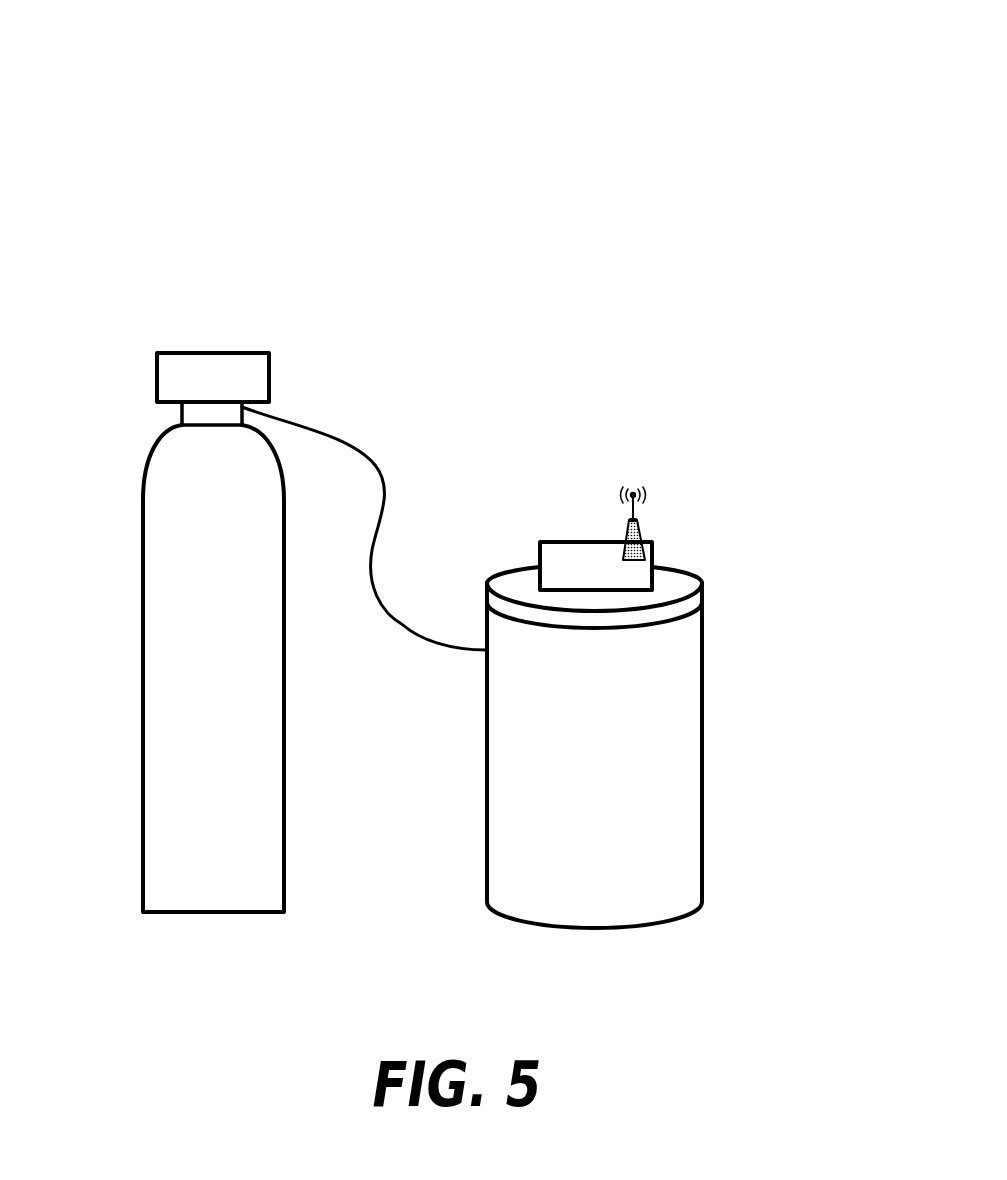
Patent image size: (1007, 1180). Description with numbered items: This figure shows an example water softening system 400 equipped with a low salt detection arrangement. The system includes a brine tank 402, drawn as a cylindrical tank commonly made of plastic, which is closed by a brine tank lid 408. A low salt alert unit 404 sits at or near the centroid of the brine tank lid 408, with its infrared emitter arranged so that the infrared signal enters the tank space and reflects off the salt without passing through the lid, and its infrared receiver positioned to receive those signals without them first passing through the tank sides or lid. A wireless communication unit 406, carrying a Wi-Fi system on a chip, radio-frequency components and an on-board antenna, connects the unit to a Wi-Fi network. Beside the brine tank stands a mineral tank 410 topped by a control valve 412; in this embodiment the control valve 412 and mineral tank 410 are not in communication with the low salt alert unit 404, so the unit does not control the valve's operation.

The water softening system 400 is at (760, 76).
The brine tank 402 is at (702, 787).
The low salt alert unit 404 is at (583, 542).
The wireless communication unit 406 is at (642, 530).
The brine tank lid 408 is at (702, 585).
The mineral tank 410 is at (142, 490).
The control valve 412 is at (157, 362).